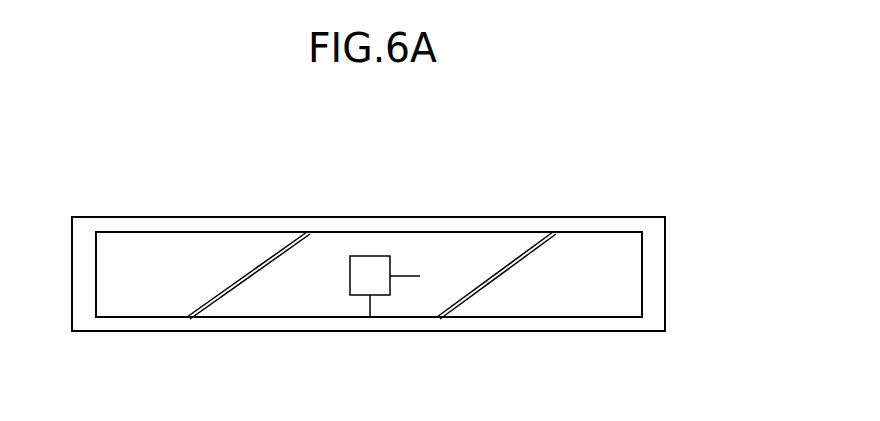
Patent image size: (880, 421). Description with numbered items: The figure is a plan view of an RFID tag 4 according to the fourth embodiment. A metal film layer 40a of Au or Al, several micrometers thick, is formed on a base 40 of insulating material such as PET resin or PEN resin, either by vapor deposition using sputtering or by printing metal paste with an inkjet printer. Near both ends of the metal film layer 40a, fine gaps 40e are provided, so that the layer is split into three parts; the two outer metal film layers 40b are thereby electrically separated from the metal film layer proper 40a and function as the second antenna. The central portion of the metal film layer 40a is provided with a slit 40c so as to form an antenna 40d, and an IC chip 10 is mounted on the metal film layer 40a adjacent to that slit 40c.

The RFID tag 4 is at (624, 166).
The IC chip 10 is at (358, 282).
The base 40 is at (657, 305).
The metal film layer 40a is at (362, 242).
The outer metal film layers 40b is at (124, 243).
The slit 40c is at (405, 277).
The antenna 40d is at (323, 232).
The fine gaps 40e is at (223, 290).